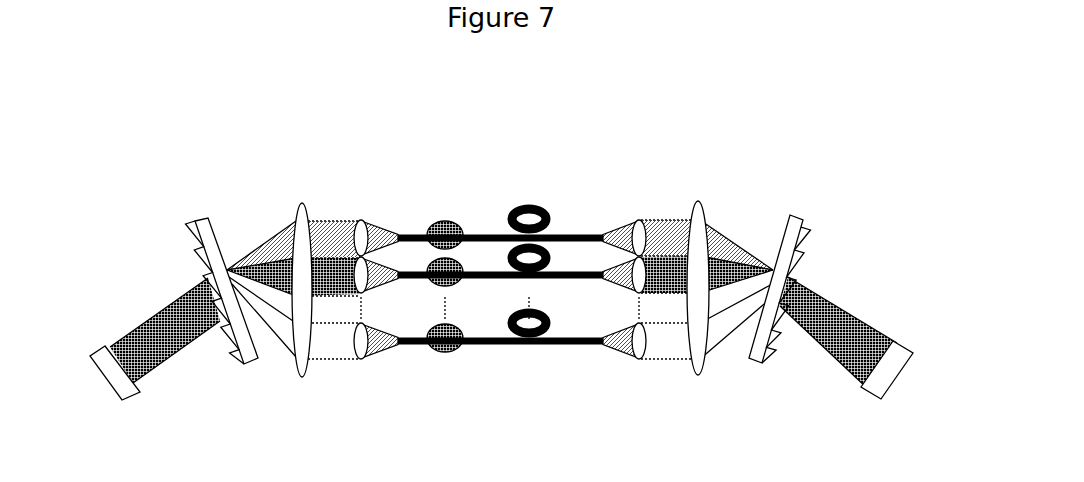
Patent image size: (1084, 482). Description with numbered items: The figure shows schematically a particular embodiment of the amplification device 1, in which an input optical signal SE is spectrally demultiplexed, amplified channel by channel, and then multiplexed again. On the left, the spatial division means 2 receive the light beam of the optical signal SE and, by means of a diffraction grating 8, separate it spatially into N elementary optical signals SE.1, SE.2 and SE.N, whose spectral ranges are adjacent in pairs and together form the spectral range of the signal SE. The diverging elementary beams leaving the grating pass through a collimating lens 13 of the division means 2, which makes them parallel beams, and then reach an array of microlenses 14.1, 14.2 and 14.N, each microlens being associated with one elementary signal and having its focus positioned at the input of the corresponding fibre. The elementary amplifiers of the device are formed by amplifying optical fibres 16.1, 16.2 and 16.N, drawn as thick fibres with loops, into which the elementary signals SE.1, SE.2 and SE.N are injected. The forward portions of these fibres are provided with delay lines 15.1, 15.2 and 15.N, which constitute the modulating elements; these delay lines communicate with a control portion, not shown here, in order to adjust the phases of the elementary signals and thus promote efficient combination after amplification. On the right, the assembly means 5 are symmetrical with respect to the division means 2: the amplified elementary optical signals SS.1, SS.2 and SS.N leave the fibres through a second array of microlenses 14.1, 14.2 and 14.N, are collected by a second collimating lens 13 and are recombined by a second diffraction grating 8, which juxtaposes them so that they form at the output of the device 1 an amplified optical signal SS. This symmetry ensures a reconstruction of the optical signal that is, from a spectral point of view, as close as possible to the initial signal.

The amplification device 1 is at (342, 85).
The spatial division means 2 is at (163, 138).
The assembly means 5 is at (811, 121).
The diffraction grating 8 is at (246, 365).
The collimating lens 13 is at (309, 333).
The microlens 14.1 is at (357, 232).
The microlens 14.2 is at (356, 270).
The microlens 14.N is at (368, 352).
The delay line 15.1 is at (435, 228).
The delay line 15.2 is at (455, 273).
The delay line 15.N is at (447, 347).
The amplifying optical fibre 16.1 is at (517, 211).
The amplifying optical fibre 16.2 is at (552, 272).
The amplifying optical fibre 16.N is at (543, 343).
The optical signal SE is at (145, 353).
The elementary optical signal SE.1 is at (272, 248).
The elementary optical signal SE.2 is at (241, 298).
The elementary optical signal SE.N is at (263, 323).
The amplified optical signal SS is at (827, 303).
The amplified elementary optical signal SS.1 is at (725, 242).
The amplified elementary optical signal SS.2 is at (730, 267).
The amplified elementary optical signal SS.N is at (723, 338).